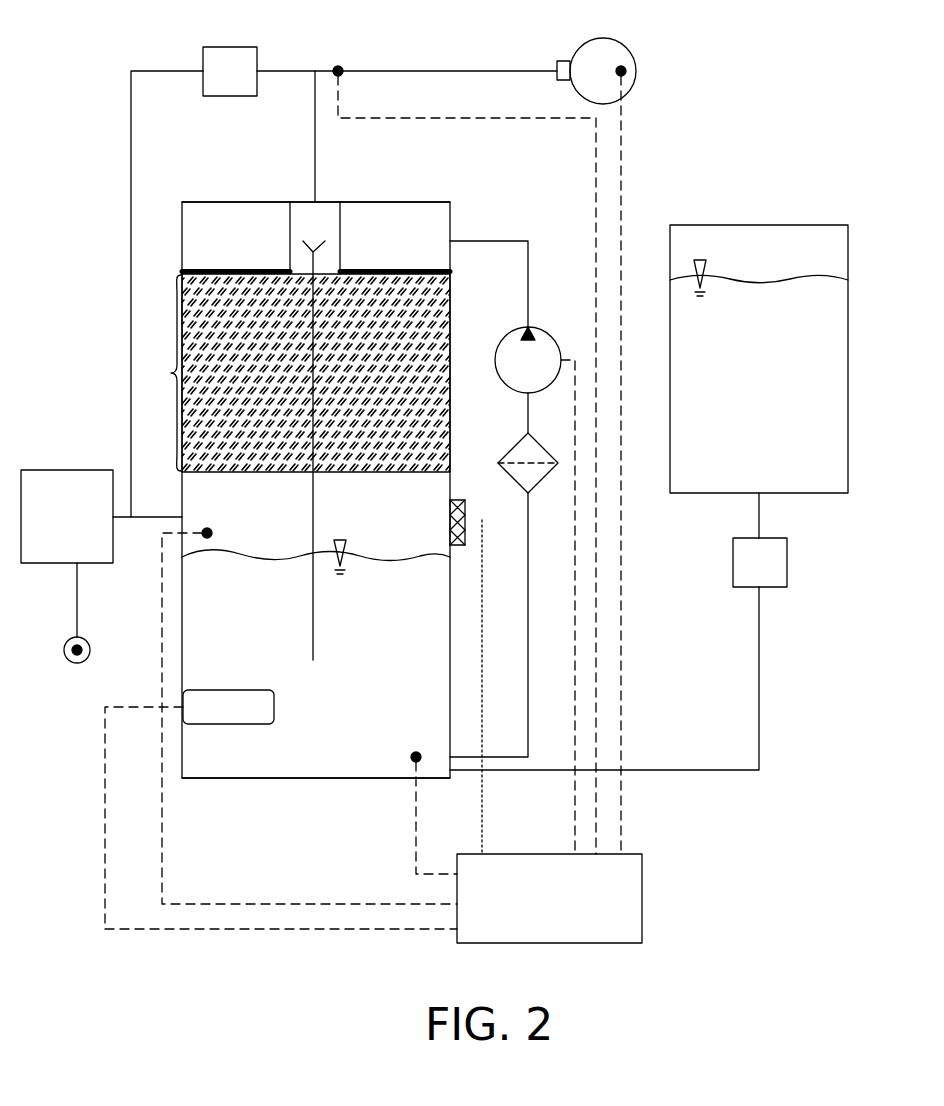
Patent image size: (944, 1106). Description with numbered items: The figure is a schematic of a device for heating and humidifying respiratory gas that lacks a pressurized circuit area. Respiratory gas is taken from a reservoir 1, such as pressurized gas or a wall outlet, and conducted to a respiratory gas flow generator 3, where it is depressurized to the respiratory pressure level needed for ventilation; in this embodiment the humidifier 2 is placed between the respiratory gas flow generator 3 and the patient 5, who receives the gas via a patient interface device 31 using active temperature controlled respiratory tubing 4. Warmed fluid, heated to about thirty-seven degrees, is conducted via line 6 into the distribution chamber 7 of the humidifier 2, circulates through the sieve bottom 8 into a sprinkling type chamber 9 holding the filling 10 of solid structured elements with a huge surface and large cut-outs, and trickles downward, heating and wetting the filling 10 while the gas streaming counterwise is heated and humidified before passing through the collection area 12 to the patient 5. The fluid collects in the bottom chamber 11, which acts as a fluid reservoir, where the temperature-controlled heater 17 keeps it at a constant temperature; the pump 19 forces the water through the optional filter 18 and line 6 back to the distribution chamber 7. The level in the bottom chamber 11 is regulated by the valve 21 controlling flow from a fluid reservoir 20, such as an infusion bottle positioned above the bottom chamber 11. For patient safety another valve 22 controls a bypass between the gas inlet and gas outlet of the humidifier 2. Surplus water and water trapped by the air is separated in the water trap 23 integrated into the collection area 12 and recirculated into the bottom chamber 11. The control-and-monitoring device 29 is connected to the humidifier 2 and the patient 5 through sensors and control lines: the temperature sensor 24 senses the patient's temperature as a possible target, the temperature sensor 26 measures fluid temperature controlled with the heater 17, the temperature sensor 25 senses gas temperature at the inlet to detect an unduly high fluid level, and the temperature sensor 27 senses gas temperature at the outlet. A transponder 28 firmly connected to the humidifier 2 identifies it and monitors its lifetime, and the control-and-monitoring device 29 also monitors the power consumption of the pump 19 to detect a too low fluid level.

The reservoir 1 is at (64, 649).
The humidifier 2 is at (182, 233).
The respiratory gas flow generator 3 is at (68, 470).
The temperature controlled respiratory tubing 4 is at (478, 71).
The patient 5 is at (632, 48).
The line 6 is at (511, 241).
The distribution chamber 7 is at (435, 202).
The sieve bottom 8 is at (235, 270).
The sprinkling type chamber 9 is at (163, 373).
The filling 10 is at (432, 397).
The bottom chamber 11 is at (325, 733).
The collection area 12 is at (305, 213).
The temperature-controlled heater 17 is at (233, 706).
The filter 18 is at (550, 475).
The pump 19 is at (511, 338).
The fluid reservoir 20 is at (836, 352).
The valve 21 is at (787, 563).
The valve 22 is at (228, 47).
The water trap 23 is at (319, 247).
The temperature sensor 24 is at (626, 73).
The temperature sensor 25 is at (208, 531).
The temperature sensor 26 is at (416, 757).
The temperature sensor 27 is at (338, 66).
The transponder 28 is at (463, 500).
The control-and-monitoring device 29 is at (642, 905).
The patient interface device 31 is at (563, 61).